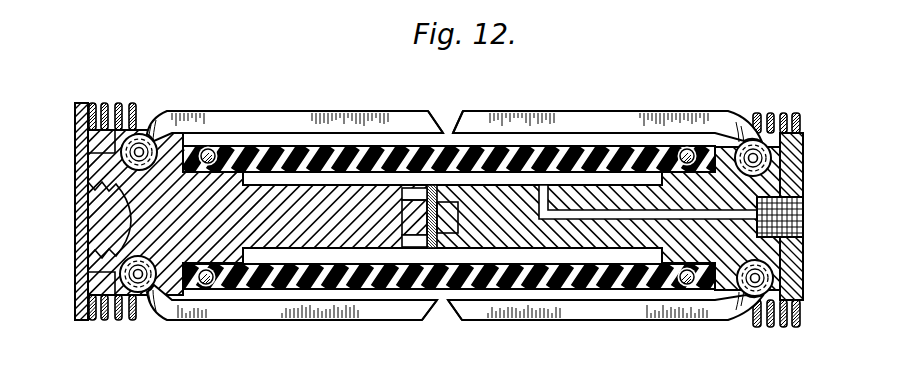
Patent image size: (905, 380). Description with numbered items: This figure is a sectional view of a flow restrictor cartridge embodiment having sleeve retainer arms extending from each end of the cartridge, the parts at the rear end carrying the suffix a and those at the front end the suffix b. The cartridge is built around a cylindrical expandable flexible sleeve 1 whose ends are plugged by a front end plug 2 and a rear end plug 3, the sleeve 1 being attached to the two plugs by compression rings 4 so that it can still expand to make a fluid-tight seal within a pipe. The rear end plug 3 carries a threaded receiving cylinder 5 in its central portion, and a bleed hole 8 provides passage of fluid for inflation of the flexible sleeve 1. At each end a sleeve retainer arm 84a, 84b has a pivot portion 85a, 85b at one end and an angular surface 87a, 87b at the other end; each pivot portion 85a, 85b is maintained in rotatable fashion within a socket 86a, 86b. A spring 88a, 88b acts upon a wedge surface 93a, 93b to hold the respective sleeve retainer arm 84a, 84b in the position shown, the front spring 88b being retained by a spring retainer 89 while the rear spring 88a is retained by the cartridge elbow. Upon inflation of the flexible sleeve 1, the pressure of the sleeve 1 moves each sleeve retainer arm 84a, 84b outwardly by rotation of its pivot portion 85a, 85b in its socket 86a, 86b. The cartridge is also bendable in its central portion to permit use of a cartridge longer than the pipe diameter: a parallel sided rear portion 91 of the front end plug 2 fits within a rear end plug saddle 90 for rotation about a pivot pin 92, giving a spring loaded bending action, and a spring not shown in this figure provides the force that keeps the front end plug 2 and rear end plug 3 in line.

The expandable flexible sleeve 1 is at (282, 282).
The front end plug 2 is at (103, 252).
The rear end plug 3 is at (795, 252).
The compression rings 4 is at (204, 284).
The threaded receiving cylinder 5 is at (804, 215).
The bleed hole 8 is at (543, 192).
The rear sleeve retainer arm 84a is at (618, 114).
The front sleeve retainer arm 84b is at (285, 111).
The rear pivot portion 85a is at (760, 157).
The front pivot portion 85b is at (136, 152).
The rear socket 86a is at (780, 160).
The front socket 86b is at (127, 160).
The rear angular surface 87a is at (456, 110).
The front angular surface 87b is at (441, 109).
The rear spring 88a is at (773, 113).
The front spring 88b is at (105, 102).
The spring retainer 89 is at (77, 213).
The rear end plug saddle 90 is at (412, 242).
The parallel sided rear portion 91 is at (458, 221).
The pivot pin 92 is at (427, 213).
The rear wedge surface 93a is at (741, 118).
The front wedge surface 93b is at (153, 115).